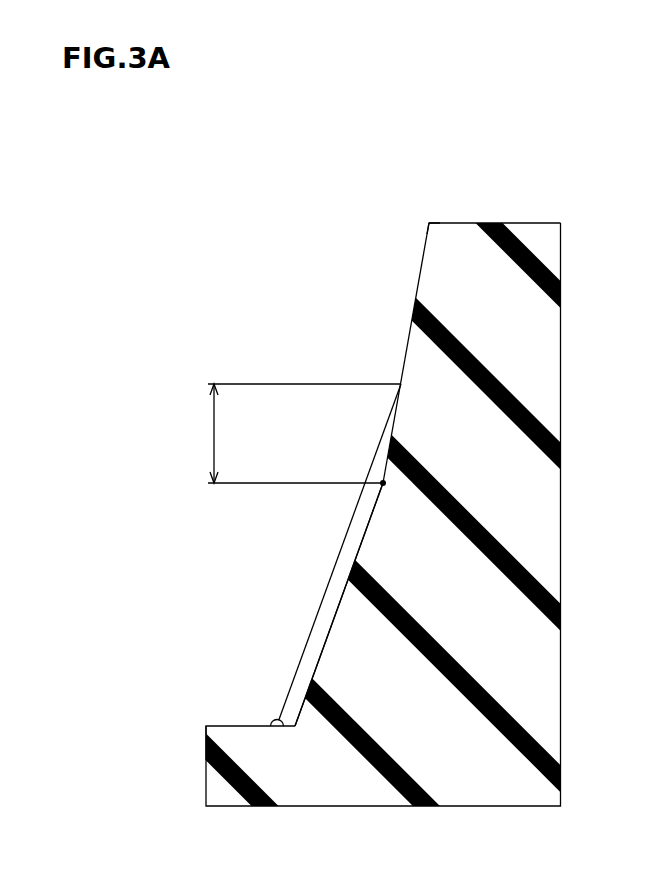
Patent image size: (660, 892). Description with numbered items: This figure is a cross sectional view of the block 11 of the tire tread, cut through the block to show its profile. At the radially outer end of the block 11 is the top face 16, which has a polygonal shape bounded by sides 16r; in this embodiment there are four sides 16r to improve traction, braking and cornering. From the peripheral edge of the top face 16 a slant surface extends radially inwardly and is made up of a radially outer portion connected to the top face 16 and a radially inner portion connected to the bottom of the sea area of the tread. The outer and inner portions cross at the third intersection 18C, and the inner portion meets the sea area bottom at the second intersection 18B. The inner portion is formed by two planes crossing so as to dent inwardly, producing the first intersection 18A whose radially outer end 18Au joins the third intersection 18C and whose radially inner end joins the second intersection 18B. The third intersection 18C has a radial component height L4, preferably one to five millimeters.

The block 11 is at (558, 212).
The top face 16 is at (498, 223).
The side 16r is at (429, 223).
The third intersection 18C is at (388, 433).
The first intersection 18A is at (328, 628).
The radially outer end of first intersection 18Au is at (383, 483).
The second intersection 18B is at (276, 720).
The radial component height L4 is at (300, 433).